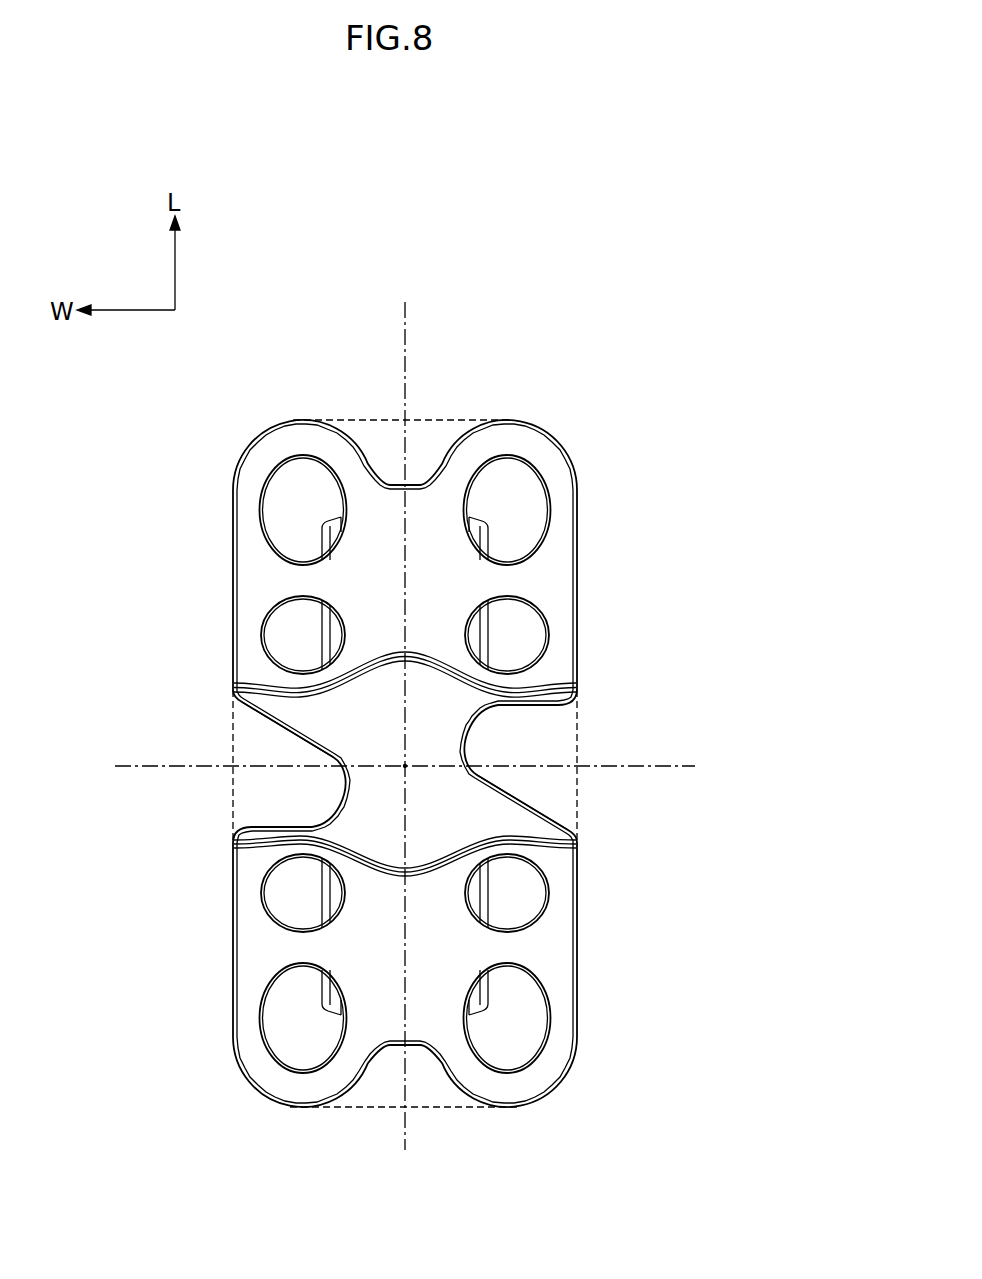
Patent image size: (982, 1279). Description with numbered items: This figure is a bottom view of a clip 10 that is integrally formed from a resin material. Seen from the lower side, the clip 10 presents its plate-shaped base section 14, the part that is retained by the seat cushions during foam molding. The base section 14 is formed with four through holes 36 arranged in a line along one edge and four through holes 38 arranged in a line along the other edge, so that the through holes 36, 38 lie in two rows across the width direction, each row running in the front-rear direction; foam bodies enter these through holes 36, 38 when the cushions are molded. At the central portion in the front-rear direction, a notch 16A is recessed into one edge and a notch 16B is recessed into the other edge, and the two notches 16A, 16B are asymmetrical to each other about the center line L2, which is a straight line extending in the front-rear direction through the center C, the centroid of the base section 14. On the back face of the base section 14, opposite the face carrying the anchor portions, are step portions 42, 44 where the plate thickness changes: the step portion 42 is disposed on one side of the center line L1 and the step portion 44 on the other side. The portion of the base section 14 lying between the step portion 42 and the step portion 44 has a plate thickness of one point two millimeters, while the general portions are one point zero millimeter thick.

The clip 10 is at (588, 268).
The base section 14 is at (591, 439).
The notch 16A is at (556, 804).
The notch 16B is at (264, 721).
The through hole 36 is at (542, 505).
The through hole 38 is at (270, 505).
The step portion 42 is at (433, 654).
The step portion 44 is at (433, 876).
The center C is at (405, 766).
The center line L1 is at (690, 766).
The center line L2 is at (405, 332).